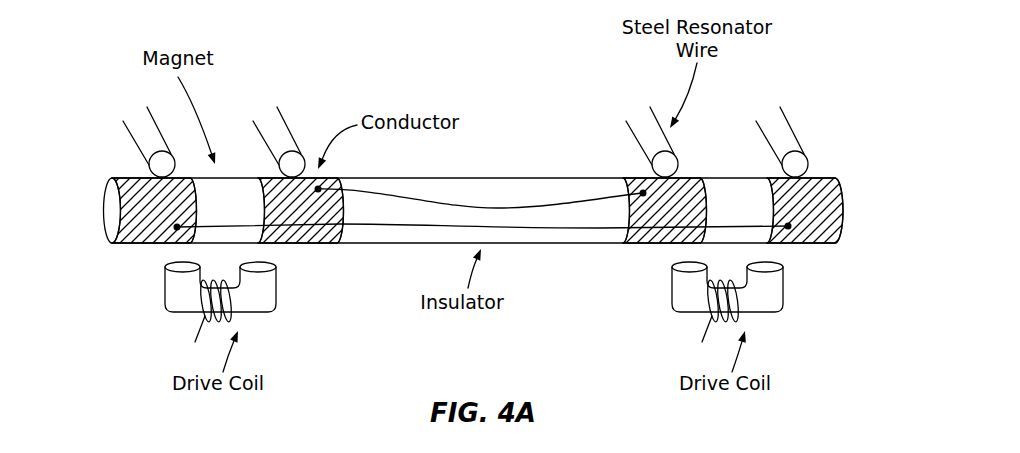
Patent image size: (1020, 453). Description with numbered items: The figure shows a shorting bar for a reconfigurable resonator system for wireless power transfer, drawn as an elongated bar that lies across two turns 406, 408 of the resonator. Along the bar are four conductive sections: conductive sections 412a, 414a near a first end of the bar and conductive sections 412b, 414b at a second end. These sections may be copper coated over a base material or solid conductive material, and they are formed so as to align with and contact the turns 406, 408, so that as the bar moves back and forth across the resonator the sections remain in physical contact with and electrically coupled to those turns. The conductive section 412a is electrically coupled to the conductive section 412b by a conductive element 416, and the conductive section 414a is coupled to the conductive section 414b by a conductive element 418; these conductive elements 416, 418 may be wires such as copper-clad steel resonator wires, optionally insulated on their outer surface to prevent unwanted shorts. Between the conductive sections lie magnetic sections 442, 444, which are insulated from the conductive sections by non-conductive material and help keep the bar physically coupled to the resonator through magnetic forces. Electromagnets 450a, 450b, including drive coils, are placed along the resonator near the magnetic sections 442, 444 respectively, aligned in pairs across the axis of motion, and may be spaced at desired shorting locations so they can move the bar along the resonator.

The turn of the resonator 406 is at (138, 150).
The turn of the resonator 408 is at (288, 121).
The conductive section 412a is at (140, 244).
The conductive section 412b is at (813, 244).
The conductive section 414a is at (297, 244).
The conductive section 414b is at (635, 244).
The conductive element 416 is at (455, 227).
The conductive element 418 is at (550, 207).
The magnetic section 442 is at (232, 178).
The magnetic section 444 is at (732, 177).
The electromagnets 450a is at (257, 312).
The electromagnets 450b is at (763, 312).